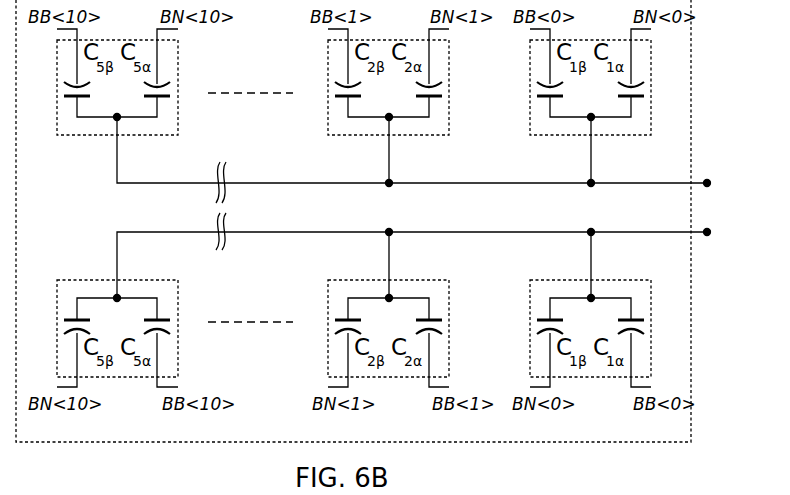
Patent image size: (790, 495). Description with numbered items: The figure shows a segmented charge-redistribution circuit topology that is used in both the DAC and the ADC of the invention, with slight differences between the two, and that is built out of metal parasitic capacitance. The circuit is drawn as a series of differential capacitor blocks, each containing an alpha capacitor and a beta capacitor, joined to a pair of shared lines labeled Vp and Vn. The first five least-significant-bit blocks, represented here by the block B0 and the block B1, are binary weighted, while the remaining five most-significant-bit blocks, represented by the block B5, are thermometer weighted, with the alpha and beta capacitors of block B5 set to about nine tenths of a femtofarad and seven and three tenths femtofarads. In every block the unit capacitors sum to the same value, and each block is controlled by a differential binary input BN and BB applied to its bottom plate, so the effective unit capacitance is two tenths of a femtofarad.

The positive output node Vp is at (430, 159).
The negative output node Vn is at (430, 259).
The thermometer-weighted MSB capacitor block B5 is at (109, 208).
The binary-weighted LSB capacitor block B1 is at (388, 208).
The binary-weighted LSB capacitor block B0 is at (590, 208).